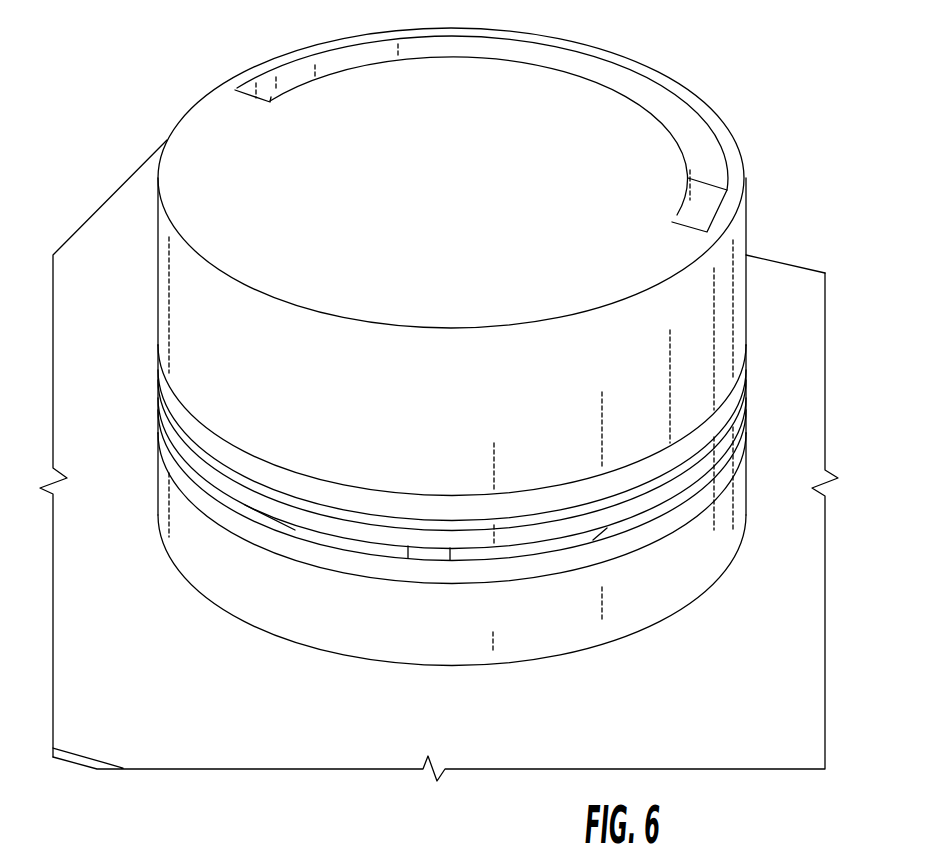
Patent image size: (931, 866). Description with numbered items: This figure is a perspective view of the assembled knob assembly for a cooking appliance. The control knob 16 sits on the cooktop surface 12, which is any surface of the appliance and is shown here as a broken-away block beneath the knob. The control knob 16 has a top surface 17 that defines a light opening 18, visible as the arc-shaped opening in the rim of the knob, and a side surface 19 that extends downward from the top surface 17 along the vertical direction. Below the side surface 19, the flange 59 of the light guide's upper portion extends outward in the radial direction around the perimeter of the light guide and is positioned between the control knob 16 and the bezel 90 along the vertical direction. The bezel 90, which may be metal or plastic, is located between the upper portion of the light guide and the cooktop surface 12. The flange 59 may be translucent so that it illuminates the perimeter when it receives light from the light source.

The cooktop surface 12 is at (696, 714).
The control knob 16 is at (748, 266).
The top surface 17 is at (424, 184).
The light opening 18 is at (613, 78).
The side surface 19 is at (426, 416).
The flange 59 is at (197, 447).
The bezel 90 is at (424, 640).